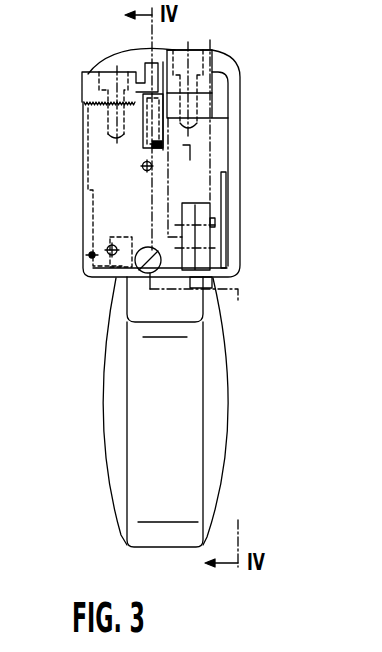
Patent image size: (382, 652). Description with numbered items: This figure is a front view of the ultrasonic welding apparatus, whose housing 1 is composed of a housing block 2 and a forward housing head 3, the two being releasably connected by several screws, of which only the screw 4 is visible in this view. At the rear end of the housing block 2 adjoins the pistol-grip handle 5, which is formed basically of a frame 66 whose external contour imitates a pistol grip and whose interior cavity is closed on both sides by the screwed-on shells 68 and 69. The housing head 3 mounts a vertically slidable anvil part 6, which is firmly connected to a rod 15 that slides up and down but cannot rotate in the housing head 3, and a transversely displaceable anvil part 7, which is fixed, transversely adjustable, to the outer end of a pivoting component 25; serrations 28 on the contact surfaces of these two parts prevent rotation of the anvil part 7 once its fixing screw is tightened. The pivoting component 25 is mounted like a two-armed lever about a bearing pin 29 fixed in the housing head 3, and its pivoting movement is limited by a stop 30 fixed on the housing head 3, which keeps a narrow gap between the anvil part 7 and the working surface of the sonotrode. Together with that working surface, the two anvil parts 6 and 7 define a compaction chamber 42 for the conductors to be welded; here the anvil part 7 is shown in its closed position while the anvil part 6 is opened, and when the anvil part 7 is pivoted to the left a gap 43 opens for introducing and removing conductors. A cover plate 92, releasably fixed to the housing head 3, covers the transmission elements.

The housing 1 is at (234, 52).
The housing block 2 is at (241, 88).
The housing head 3 is at (222, 132).
The screw 4 is at (156, 280).
The handle 5 is at (167, 411).
The anvil part 6 is at (205, 44).
The anvil part 7 is at (78, 87).
The rod 15 is at (210, 207).
The pivoting component 25 is at (93, 203).
The serrations 28 is at (97, 103).
The bearing pin 29 is at (140, 172).
The stop 30 is at (90, 255).
The compaction chamber 42 is at (154, 79).
The gap 43 is at (156, 68).
The frame 66 is at (178, 430).
The shell 68 is at (107, 433).
The shell 69 is at (223, 445).
The cover plate 92 is at (228, 238).